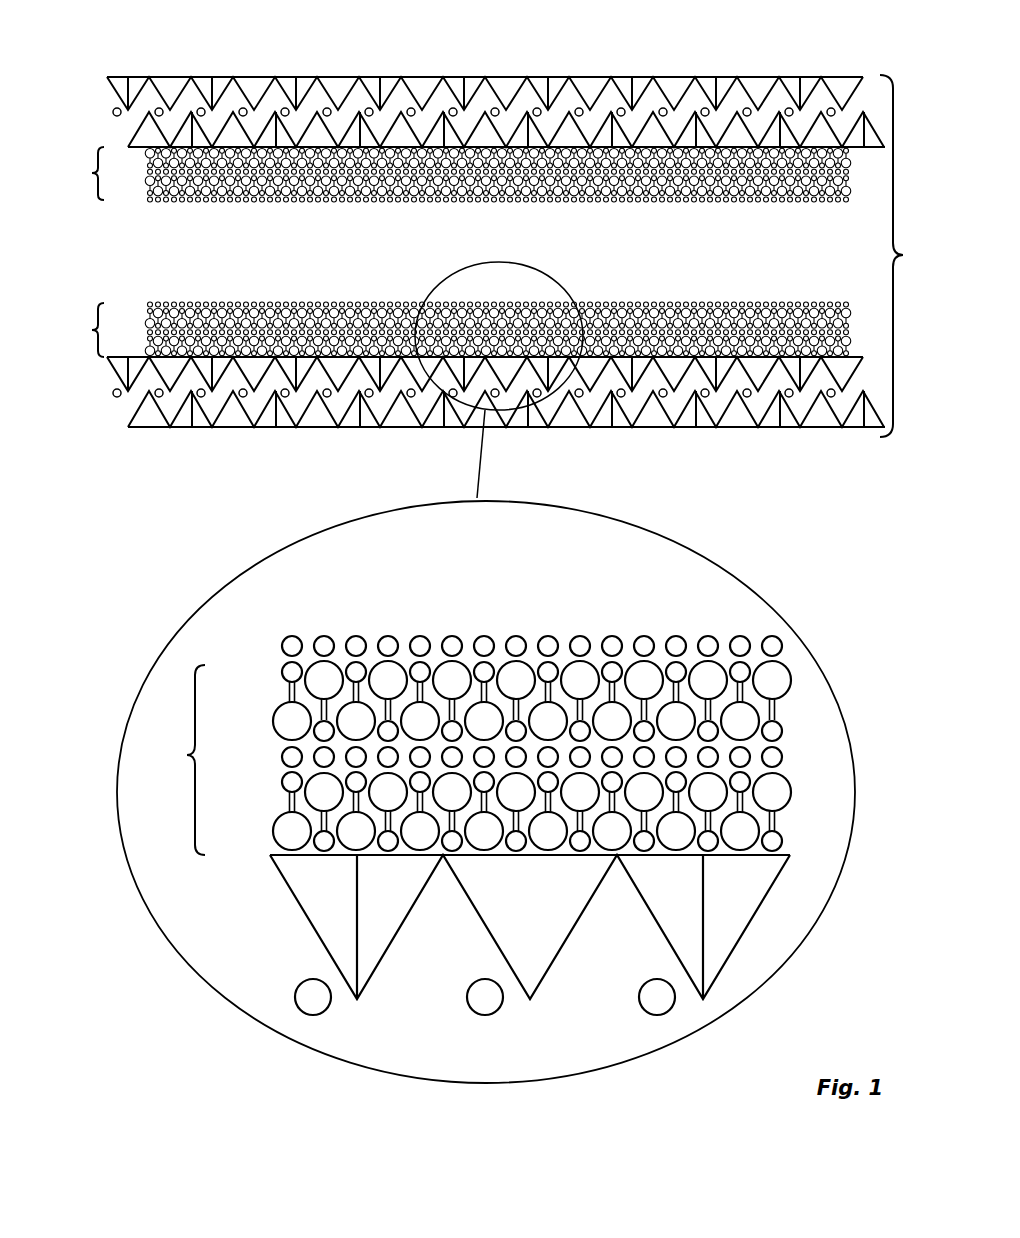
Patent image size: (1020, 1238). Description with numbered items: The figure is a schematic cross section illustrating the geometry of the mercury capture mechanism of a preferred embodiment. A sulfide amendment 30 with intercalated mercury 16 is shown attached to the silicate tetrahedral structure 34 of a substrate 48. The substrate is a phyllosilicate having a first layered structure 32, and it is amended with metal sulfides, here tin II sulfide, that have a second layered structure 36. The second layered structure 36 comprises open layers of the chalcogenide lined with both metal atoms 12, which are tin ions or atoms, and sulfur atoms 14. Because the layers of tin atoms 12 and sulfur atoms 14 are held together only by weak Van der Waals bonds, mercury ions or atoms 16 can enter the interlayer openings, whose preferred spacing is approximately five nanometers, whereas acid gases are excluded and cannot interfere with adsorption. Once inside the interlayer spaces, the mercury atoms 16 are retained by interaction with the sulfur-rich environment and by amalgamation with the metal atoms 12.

The metal atoms 12 is at (283, 672).
The sulfur atoms 14 is at (273, 733).
The mercury atoms 16 is at (781, 645).
The sulfide amendment 30 is at (214, 203).
The first layered structure 32 is at (498, 459).
The silicate tetrahedral structure 34 is at (725, 953).
The second layered structure 36 is at (478, 521).
The substrate 48 is at (172, 77).